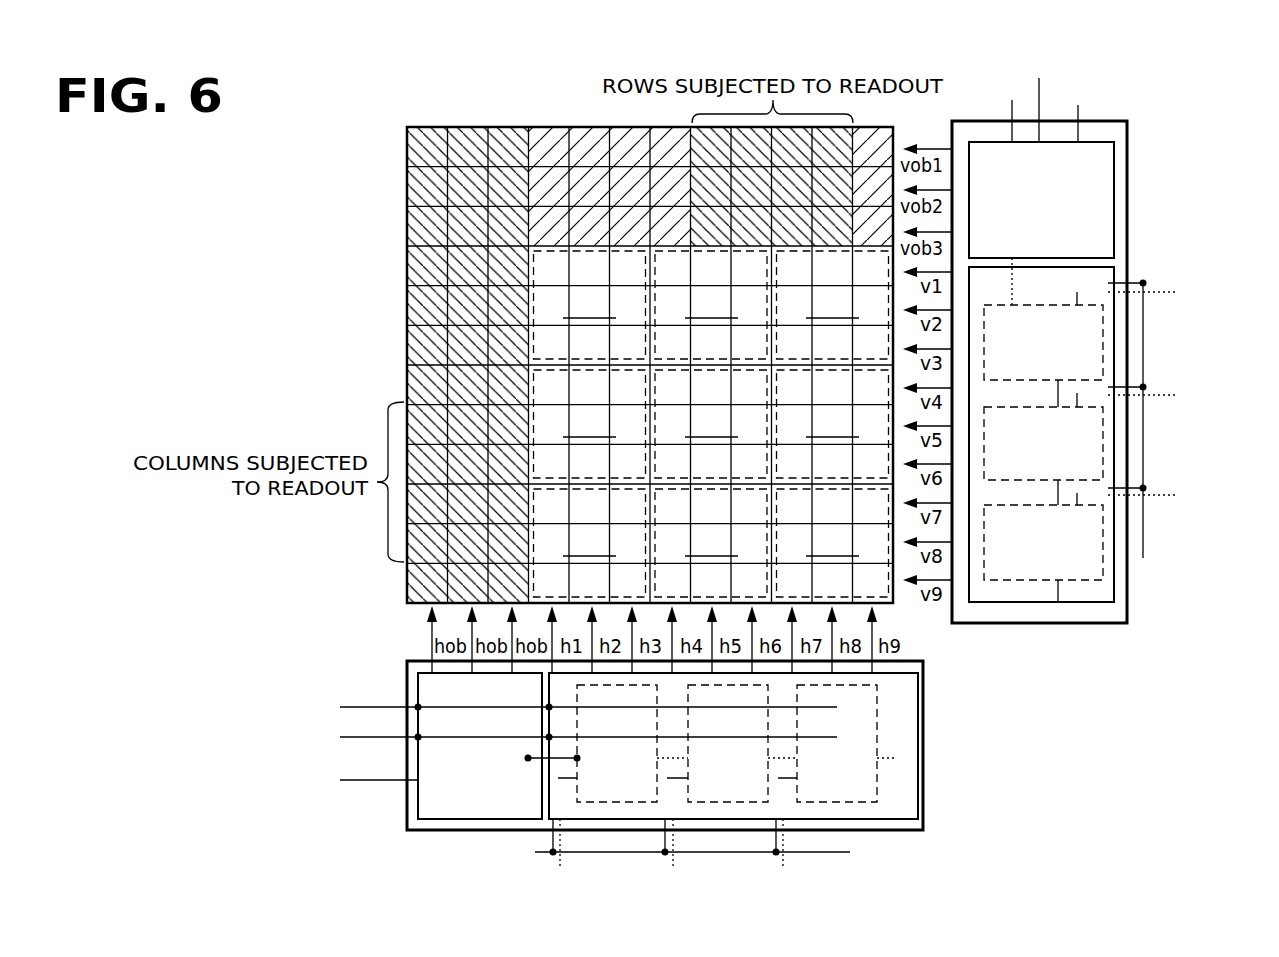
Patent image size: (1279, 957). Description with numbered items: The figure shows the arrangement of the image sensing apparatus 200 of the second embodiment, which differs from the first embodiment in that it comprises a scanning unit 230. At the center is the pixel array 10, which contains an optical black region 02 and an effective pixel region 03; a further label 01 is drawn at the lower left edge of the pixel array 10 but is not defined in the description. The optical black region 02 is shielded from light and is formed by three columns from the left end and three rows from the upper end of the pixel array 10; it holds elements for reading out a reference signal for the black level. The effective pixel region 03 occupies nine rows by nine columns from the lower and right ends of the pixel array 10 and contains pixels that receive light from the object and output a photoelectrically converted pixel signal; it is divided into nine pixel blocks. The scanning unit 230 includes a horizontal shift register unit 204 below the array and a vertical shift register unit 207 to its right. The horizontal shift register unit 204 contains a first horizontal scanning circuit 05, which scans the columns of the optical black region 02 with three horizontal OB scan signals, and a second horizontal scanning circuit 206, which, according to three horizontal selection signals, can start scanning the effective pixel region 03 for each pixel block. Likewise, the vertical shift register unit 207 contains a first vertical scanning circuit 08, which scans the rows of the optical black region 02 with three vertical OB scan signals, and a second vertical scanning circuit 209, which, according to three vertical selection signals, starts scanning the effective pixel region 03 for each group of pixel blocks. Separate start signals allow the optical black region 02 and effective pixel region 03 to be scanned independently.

The pixel array 10 is at (523, 89).
The effective pixel region 03 is at (588, 293).
The optical black region 02 is at (407, 340).
The pixel array 01 is at (618, 338).
The vertical shift register unit 207 is at (1097, 357).
The first vertical scanning circuit 08 is at (1114, 195).
The second vertical scanning circuit 209 is at (1093, 593).
The scanning unit 230 is at (578, 780).
The horizontal shift register unit 204 is at (439, 778).
The first horizontal scanning circuit 05 is at (473, 810).
The second horizontal scanning circuit 206 is at (887, 815).
The image sensing apparatus 200 is at (578, 782).